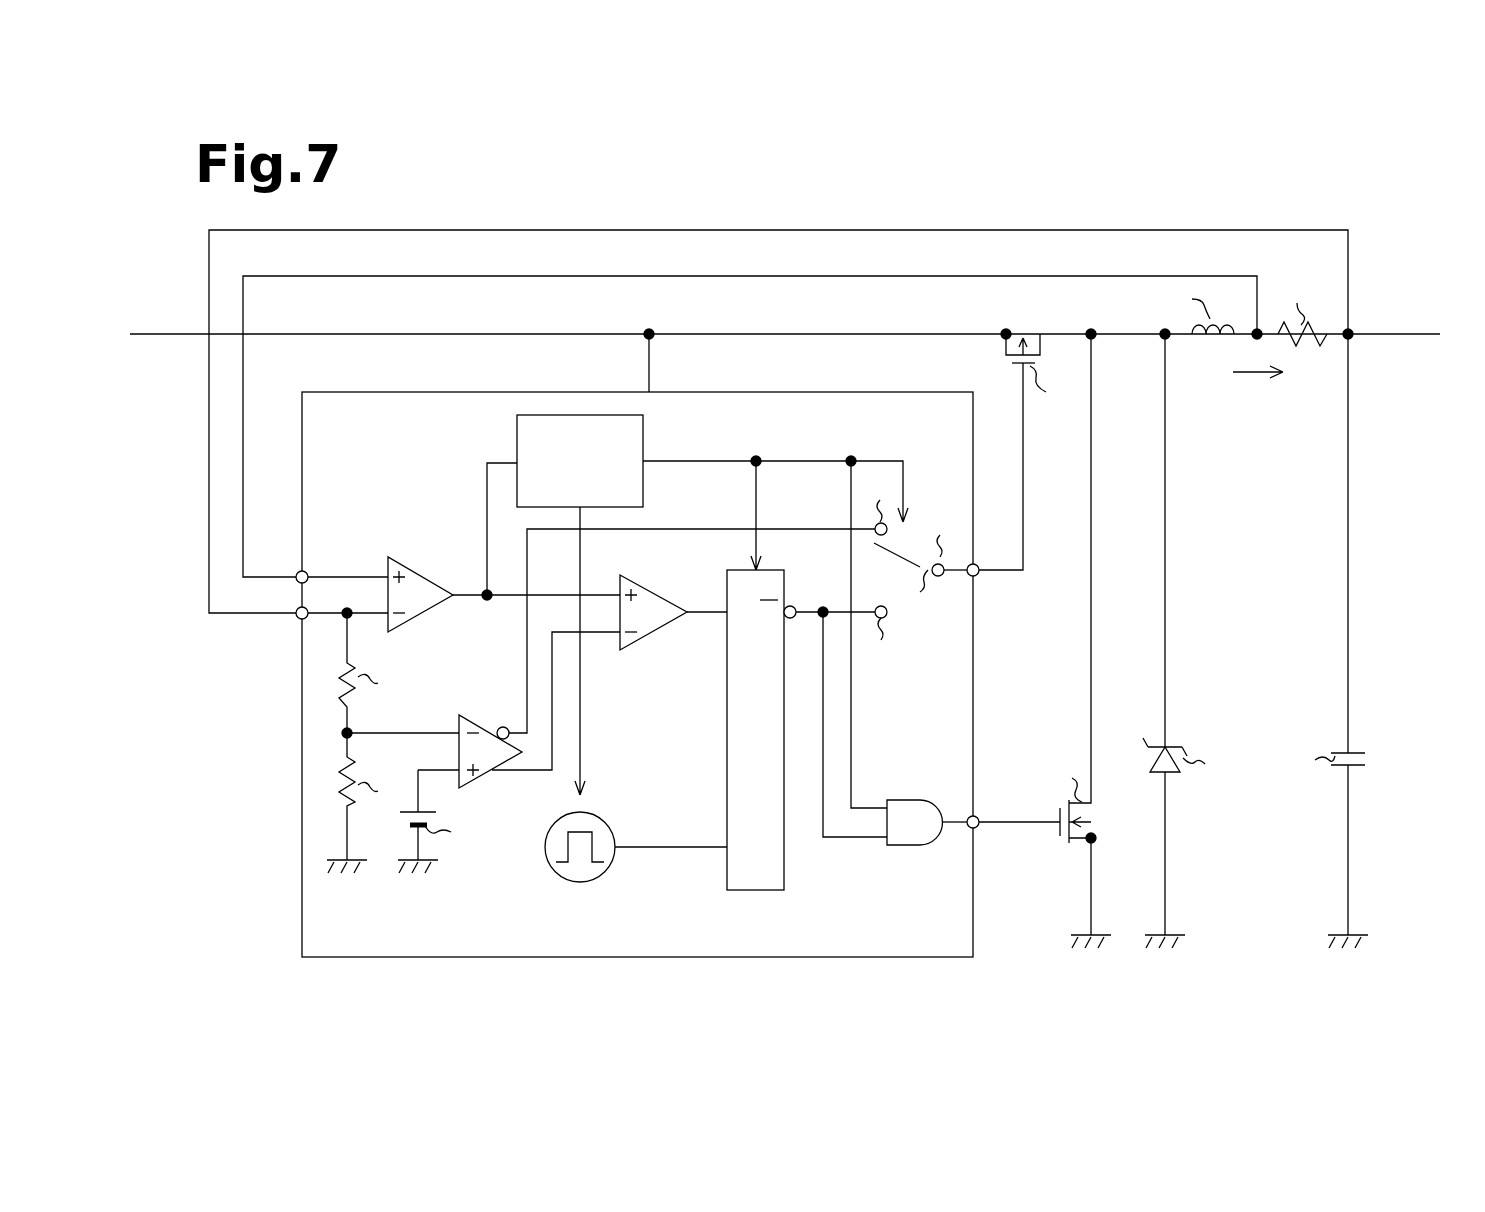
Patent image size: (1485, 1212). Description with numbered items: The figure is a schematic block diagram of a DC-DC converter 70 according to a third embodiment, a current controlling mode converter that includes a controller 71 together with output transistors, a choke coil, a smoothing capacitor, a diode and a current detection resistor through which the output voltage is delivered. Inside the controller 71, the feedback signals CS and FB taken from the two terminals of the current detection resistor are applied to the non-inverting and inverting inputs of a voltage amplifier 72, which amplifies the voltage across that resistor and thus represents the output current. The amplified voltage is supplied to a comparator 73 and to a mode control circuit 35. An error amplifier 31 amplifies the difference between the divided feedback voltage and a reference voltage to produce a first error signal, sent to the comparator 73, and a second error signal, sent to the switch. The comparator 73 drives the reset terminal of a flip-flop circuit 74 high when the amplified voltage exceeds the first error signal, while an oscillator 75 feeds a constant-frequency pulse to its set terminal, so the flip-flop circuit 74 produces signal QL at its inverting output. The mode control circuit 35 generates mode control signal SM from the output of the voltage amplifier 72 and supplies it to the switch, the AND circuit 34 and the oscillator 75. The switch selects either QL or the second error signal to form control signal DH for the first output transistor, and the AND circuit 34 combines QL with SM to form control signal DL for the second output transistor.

The DC-DC converter 70 is at (1390, 221).
The controller 71 is at (886, 392).
The voltage amplifier 72 is at (420, 569).
The comparator 73 is at (650, 589).
The flip-flop circuit 74 is at (776, 576).
The oscillator 75 is at (586, 817).
The error amplifier 31 is at (456, 718).
The AND circuit 34 is at (900, 800).
The mode control circuit 35 is at (645, 432).